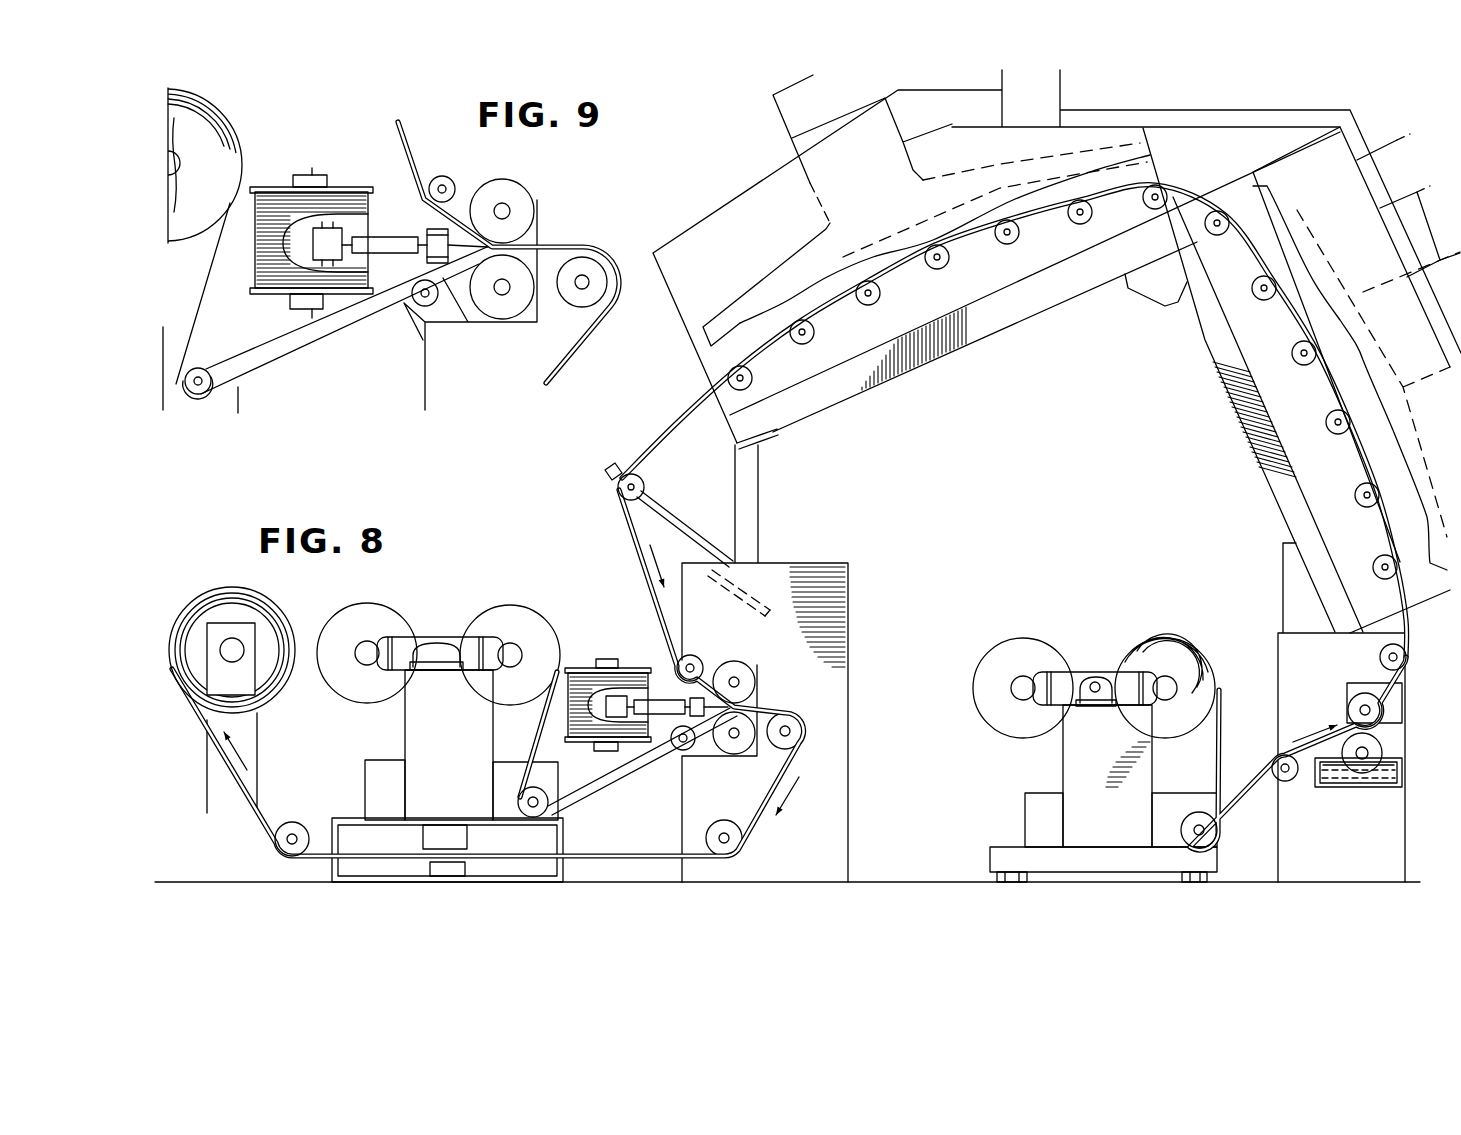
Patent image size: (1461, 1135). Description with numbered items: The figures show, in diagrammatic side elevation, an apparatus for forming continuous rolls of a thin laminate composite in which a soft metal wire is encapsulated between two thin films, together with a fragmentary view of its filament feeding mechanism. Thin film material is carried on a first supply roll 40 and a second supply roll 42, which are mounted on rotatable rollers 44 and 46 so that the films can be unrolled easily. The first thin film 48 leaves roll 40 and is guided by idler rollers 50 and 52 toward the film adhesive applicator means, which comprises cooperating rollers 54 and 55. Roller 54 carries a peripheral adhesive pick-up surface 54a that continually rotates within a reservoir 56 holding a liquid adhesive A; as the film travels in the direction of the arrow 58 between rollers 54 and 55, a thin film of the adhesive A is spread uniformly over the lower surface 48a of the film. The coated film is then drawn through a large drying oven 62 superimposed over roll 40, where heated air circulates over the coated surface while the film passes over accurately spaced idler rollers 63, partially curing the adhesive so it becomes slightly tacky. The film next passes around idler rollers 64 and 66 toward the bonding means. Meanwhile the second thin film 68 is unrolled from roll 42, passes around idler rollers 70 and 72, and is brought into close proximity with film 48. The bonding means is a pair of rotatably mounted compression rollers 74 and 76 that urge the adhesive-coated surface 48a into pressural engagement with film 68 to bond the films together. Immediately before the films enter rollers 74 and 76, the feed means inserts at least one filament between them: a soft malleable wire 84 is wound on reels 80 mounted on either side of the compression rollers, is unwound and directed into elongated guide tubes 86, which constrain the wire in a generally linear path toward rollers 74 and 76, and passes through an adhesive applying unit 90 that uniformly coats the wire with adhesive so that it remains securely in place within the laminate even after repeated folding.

In FIG. 8, the first supply roll 40 is at (1132, 650).
In FIG. 9, the second supply roll 42 is at (205, 103).
In FIG. 8, the second supply roll 42 is at (517, 612).
In FIG. 8, the rotatable roller 44 is at (1167, 680).
In FIG. 8, the rotatable roller 46 is at (512, 640).
In FIG. 9, the first thin film 48 is at (413, 140).
In FIG. 8, the first thin film 48 is at (640, 568).
In FIG. 8, the lower surface of the thin film 48a is at (1395, 703).
In FIG. 8, the idler roller 50 is at (1215, 833).
In FIG. 8, the idler roller 52 is at (1290, 780).
In FIG. 8, the first cooperating roller 54 is at (1378, 737).
In FIG. 8, the peripheral adhesive pick-up surface 54a is at (1372, 787).
In FIG. 8, the second cooperating roller 55 is at (1364, 695).
In FIG. 8, the reservoir 56 is at (1335, 788).
In FIG. 8, the arrow 58 is at (1308, 733).
In FIG. 8, the drying oven 62 is at (1202, 362).
In FIG. 8, the idler rollers 63 is at (797, 343).
In FIG. 8, the idler roller 64 is at (645, 485).
In FIG. 8, the idler roller 66 is at (694, 655).
In FIG. 9, the second thin film 68 is at (310, 343).
In FIG. 8, the second thin film 68 is at (590, 786).
In FIG. 8, the idler roller 70 is at (517, 803).
In FIG. 8, the idler roller 72 is at (686, 750).
In FIG. 9, the compression roller 74 is at (523, 192).
In FIG. 8, the compression roller 74 is at (745, 664).
In FIG. 9, the compression roller 76 is at (497, 303).
In FIG. 8, the compression roller 76 is at (735, 754).
In FIG. 9, the reels 80 is at (342, 187).
In FIG. 8, the reels 80 is at (625, 668).
In FIG. 9, the malleable wire 84 is at (300, 243).
In FIG. 8, the malleable wire 84 is at (604, 700).
In FIG. 9, the guide tubes 86 is at (397, 247).
In FIG. 8, the guide tubes 86 is at (666, 714).
In FIG. 9, the adhesive applying unit 90 is at (435, 227).
In FIG. 8, the liquid adhesive A is at (1393, 762).